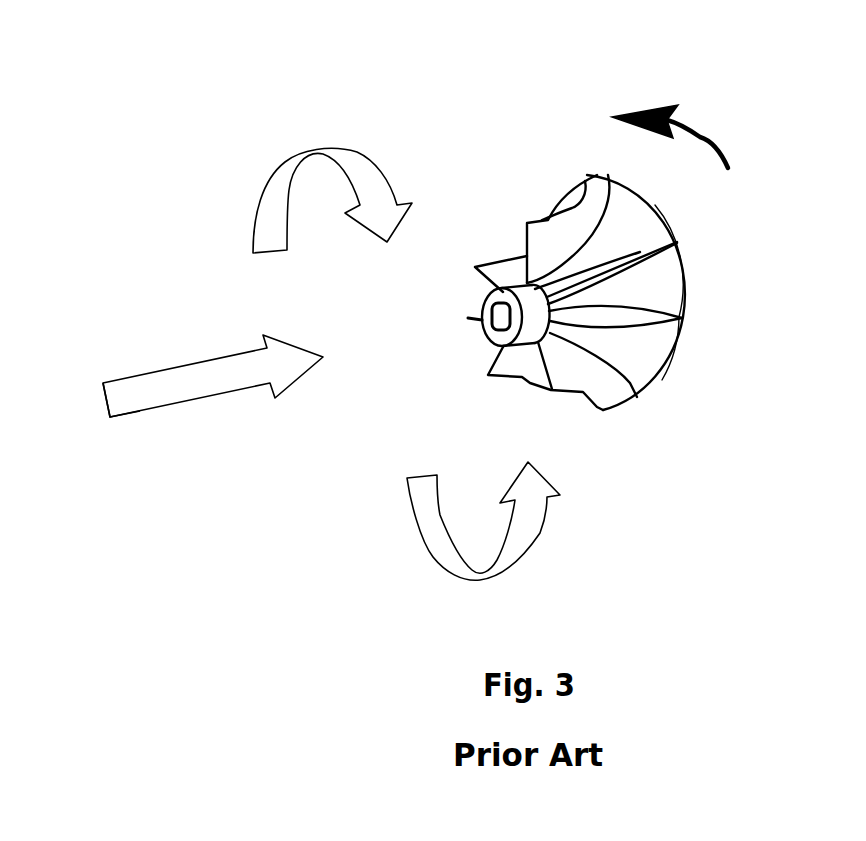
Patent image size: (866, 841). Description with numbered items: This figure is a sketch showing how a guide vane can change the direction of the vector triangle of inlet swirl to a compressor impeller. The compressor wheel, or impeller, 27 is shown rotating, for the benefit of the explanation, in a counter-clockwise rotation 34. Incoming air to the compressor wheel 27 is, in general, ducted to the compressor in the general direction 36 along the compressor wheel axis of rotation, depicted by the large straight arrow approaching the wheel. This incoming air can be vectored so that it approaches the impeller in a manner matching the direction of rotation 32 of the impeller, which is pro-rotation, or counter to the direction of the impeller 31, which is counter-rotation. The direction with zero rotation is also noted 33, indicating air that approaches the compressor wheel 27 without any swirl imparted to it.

The compressor wheel 27 is at (690, 303).
The counter-rotation direction 31 is at (315, 152).
The pro-rotation direction 32 is at (535, 502).
The zero-rotation direction 33 is at (187, 379).
The counter-clockwise rotation 34 is at (707, 135).
The general direction of incoming air 36 is at (125, 402).